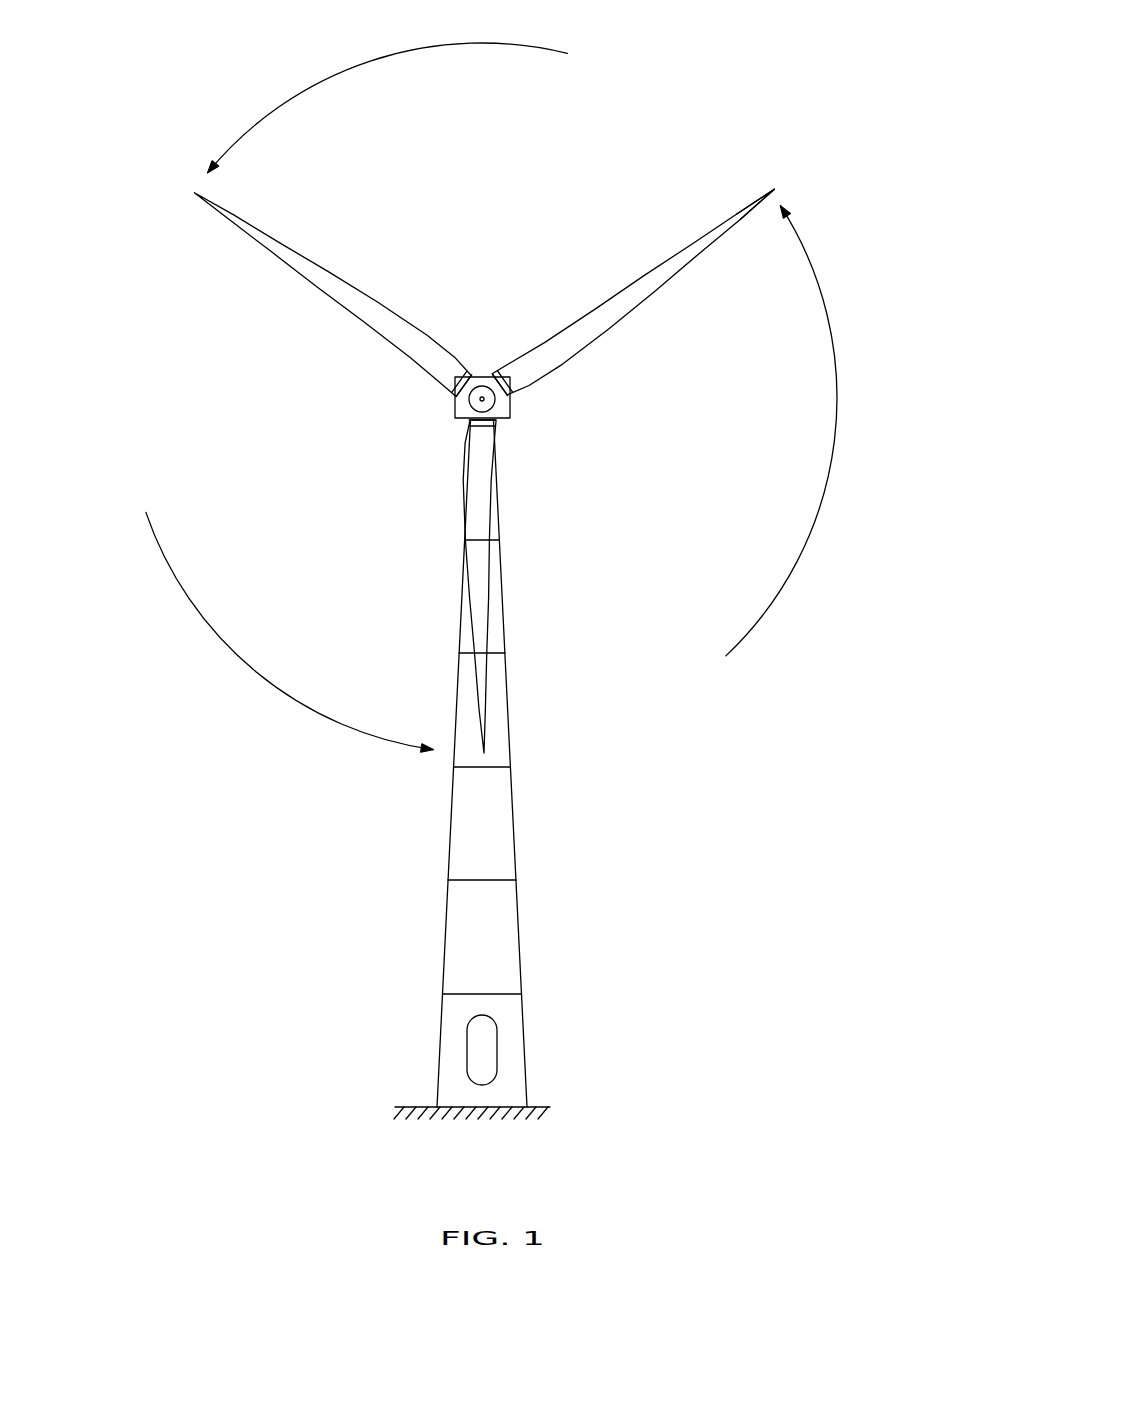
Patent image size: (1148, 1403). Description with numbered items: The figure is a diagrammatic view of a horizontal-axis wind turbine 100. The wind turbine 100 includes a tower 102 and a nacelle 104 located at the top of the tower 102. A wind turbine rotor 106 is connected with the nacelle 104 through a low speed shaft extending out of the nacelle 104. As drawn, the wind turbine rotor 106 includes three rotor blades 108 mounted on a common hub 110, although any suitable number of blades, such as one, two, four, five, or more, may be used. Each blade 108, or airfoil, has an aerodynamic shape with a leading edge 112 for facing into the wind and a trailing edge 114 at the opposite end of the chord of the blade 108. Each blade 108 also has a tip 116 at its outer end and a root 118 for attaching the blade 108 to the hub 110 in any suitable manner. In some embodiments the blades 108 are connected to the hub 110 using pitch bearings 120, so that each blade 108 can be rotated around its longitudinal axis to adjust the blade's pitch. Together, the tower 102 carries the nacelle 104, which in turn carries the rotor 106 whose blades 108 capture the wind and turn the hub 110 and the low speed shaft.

The horizontal-axis wind turbine 100 is at (430, 947).
The tower 102 is at (510, 836).
The nacelle 104 is at (508, 418).
The wind turbine rotor 106 is at (424, 406).
The rotor blade 108 is at (323, 282).
The hub 110 is at (479, 395).
The leading edge 112 is at (660, 268).
The trailing edge 114 is at (653, 290).
The tip 116 is at (782, 182).
The root 118 is at (524, 394).
The pitch bearing 120 is at (498, 388).